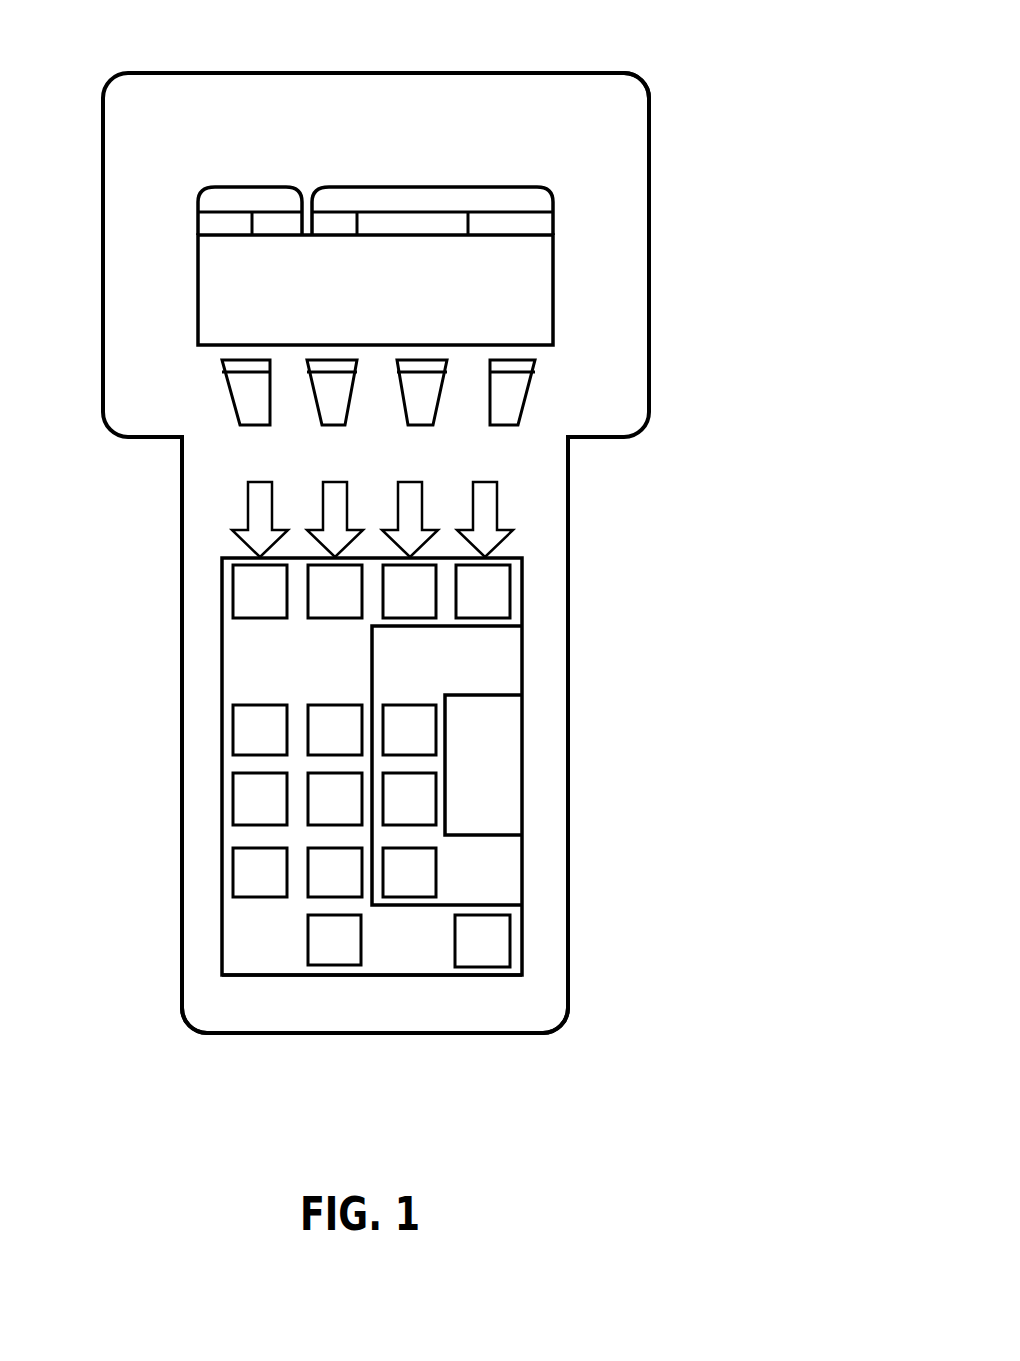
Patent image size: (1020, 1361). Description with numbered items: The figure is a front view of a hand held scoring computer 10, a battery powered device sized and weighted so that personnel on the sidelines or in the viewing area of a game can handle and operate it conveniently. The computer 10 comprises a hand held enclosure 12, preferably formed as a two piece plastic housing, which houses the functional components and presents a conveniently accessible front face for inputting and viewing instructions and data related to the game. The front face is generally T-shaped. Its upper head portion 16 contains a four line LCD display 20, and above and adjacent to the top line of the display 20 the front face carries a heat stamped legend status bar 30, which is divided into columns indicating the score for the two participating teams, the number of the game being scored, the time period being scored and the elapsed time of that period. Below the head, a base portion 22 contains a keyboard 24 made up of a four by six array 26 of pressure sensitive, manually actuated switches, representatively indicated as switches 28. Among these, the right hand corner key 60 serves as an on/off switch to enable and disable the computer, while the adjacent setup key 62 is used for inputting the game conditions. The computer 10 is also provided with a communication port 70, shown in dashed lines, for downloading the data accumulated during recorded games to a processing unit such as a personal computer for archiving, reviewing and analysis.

The hand held scoring computer 10 is at (708, 752).
The hand held enclosure 12 is at (568, 642).
The upper head portion 16 is at (649, 125).
The LCD display 20 is at (553, 298).
The base portion 22 is at (182, 675).
The keyboard 24 is at (544, 888).
The array 26 is at (355, 975).
The switches 28 is at (240, 877).
The status bar 30 is at (537, 190).
The right hand corner key 60 is at (505, 950).
The setup key 62 is at (405, 965).
The communication port 70 is at (410, 73).